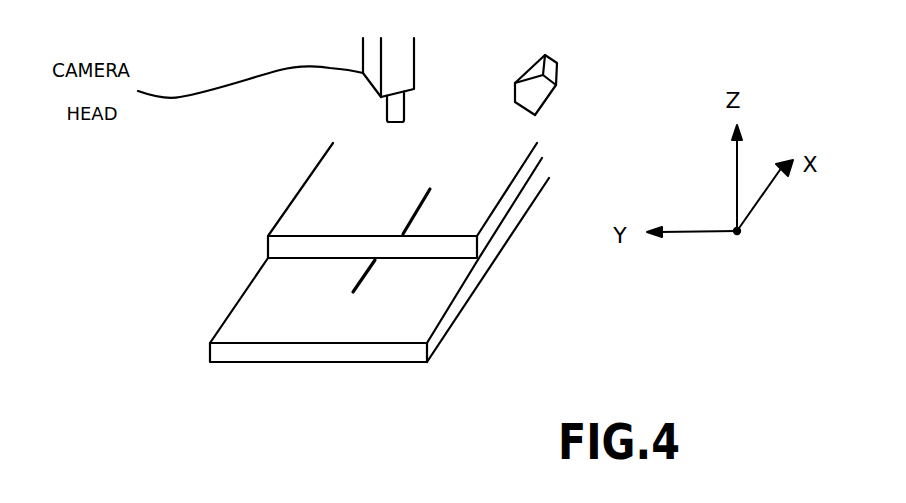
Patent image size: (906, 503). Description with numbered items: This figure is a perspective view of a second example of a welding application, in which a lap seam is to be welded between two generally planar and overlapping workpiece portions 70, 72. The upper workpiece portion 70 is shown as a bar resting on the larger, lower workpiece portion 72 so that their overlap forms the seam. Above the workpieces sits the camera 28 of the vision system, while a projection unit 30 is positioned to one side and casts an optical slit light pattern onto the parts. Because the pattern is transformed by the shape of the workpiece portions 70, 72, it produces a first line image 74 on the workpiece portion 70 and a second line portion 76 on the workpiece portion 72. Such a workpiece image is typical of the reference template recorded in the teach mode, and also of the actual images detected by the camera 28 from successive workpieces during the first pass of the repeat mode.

The camera 28 is at (414, 60).
The projection unit 30 is at (552, 73).
The workpiece portion 70 is at (310, 203).
The workpiece portion 72 is at (245, 322).
The first line image 74 is at (422, 207).
The second line portion 76 is at (367, 280).